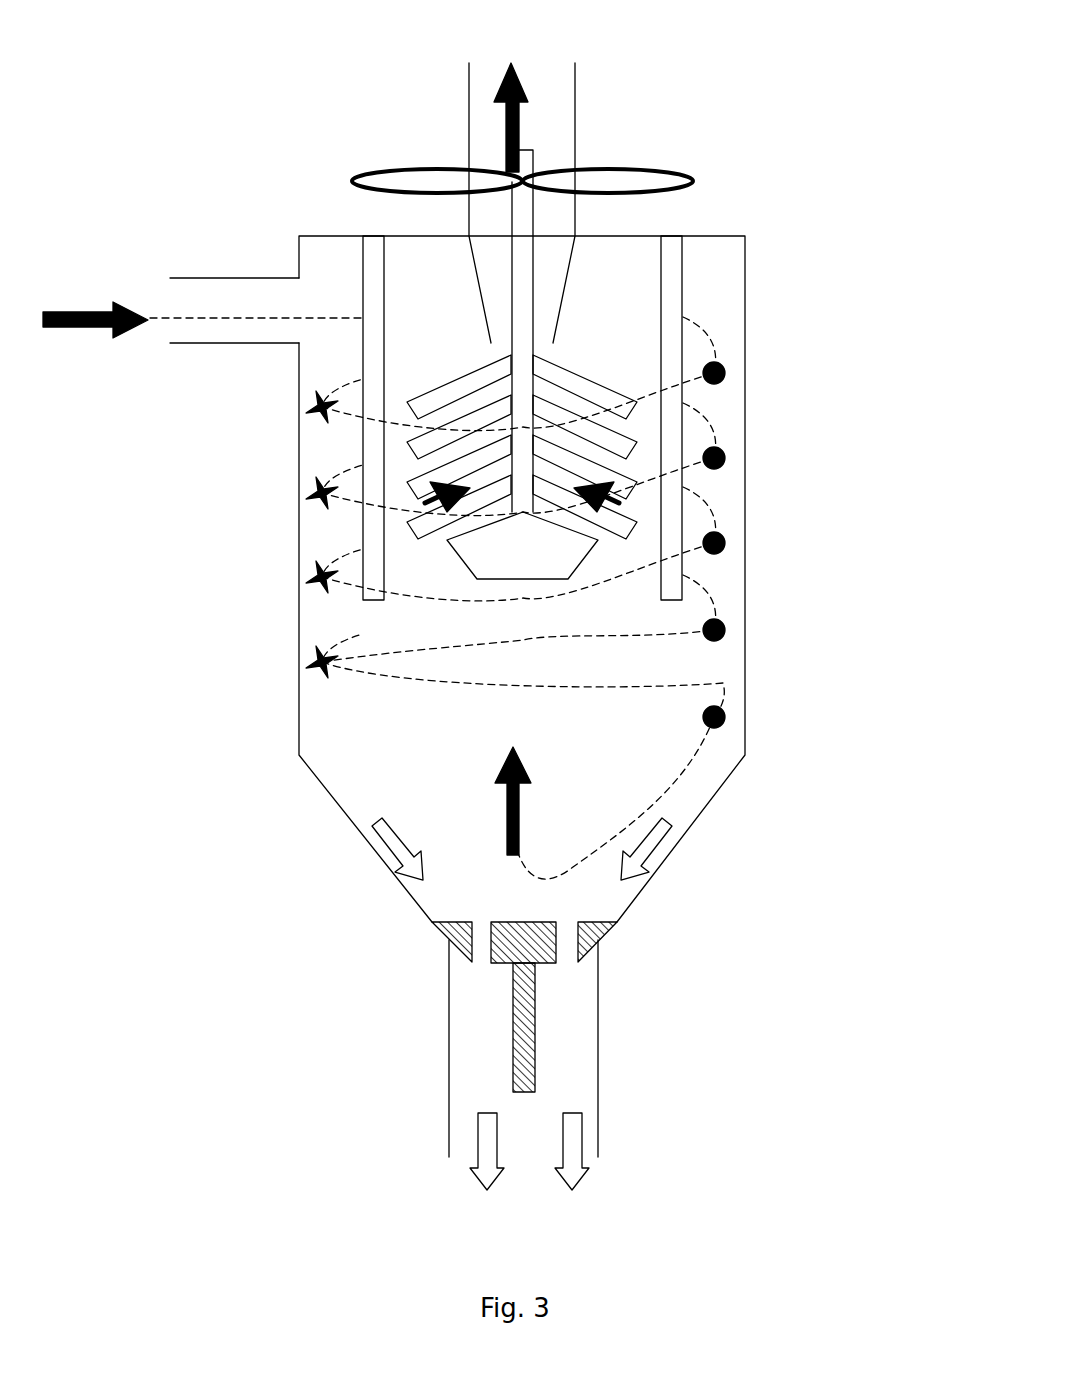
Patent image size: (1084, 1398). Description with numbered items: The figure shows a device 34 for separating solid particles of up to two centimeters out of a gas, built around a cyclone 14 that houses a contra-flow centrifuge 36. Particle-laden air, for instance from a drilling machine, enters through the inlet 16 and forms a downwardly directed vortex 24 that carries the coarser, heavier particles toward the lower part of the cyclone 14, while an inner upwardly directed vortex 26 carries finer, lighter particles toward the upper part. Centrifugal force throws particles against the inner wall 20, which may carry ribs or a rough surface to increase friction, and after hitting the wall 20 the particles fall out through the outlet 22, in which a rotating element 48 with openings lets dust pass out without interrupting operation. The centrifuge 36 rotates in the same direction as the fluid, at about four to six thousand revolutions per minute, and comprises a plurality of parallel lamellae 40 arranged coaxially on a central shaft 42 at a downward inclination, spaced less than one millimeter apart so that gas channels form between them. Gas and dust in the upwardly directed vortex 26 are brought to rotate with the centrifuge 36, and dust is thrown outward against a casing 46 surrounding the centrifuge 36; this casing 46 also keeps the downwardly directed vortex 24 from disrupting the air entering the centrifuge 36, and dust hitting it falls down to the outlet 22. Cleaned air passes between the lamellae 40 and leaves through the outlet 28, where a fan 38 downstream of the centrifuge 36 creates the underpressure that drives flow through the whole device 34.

The cyclone 14 is at (226, 465).
The inlet 16 is at (192, 297).
The inner wall 20 is at (300, 705).
The outlet 22 is at (577, 1046).
The downwardly directed vortex 24 is at (727, 607).
The inner upwardly directed vortex 26 is at (507, 813).
The outlet 28 is at (575, 103).
The device 34 is at (797, 103).
The contra-flow centrifuge 36 is at (609, 334).
The fan 38 is at (385, 168).
The lamellae 40 is at (618, 383).
The central shaft 42 is at (535, 233).
The casing 46 is at (383, 255).
The element 48 is at (513, 1026).